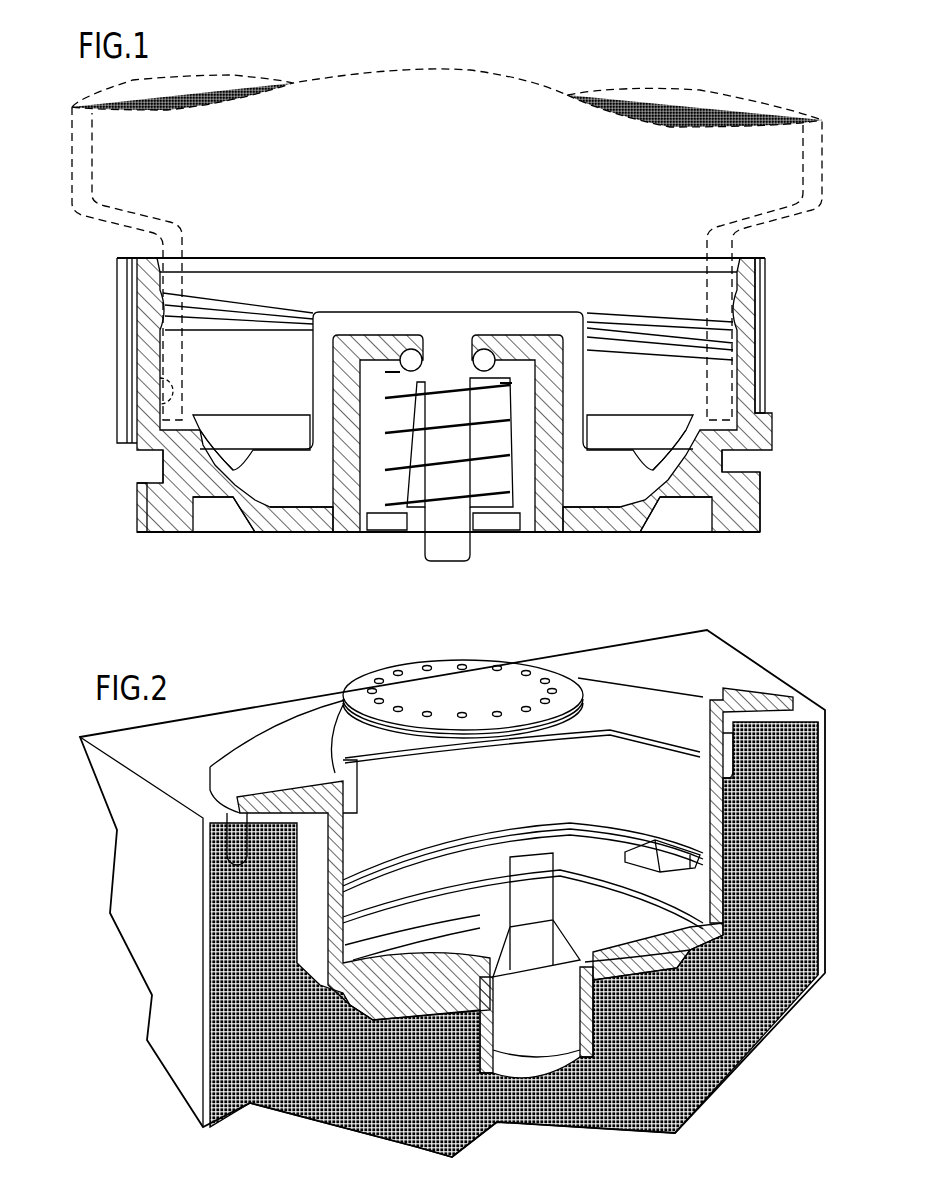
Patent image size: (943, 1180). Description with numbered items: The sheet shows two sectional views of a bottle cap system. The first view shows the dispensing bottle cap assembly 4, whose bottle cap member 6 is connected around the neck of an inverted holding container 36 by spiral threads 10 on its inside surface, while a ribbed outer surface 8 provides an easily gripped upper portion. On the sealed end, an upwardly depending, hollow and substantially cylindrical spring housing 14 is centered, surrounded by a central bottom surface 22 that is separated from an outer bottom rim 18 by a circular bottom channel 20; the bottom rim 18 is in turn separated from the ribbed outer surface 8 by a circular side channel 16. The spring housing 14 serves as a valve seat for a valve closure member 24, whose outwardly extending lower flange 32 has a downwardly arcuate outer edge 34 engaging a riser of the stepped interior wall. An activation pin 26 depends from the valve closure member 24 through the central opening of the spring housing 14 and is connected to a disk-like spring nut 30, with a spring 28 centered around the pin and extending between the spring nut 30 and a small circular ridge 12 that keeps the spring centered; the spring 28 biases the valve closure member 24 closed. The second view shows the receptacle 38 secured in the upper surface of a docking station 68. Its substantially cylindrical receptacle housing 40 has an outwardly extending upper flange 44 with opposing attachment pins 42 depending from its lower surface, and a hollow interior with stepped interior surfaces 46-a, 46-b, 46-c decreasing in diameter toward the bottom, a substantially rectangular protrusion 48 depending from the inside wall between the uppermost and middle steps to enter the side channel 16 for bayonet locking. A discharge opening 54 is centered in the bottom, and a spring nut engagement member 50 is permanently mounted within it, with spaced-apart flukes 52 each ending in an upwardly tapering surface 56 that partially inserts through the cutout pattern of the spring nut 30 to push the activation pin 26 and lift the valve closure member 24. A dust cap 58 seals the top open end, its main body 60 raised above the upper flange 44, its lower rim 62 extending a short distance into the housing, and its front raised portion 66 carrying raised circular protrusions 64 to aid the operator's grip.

In FIG. 1, the dispensing bottle cap assembly 4 is at (80, 267).
In FIG. 1, the bottle cap member 6 is at (137, 432).
In FIG. 1, the ribbed outer surface 8 is at (125, 355).
In FIG. 1, the spiral threads 10 is at (274, 297).
In FIG. 1, the circular ridge 12 is at (408, 356).
In FIG. 1, the spring housing 14 is at (543, 387).
In FIG. 1, the side channel 16 is at (145, 467).
In FIG. 1, the bottom rim 18 is at (170, 515).
In FIG. 1, the bottom channel 20 is at (218, 520).
In FIG. 1, the central bottom surface 22 is at (302, 520).
In FIG. 1, the valve closure member 24 is at (528, 323).
In FIG. 1, the activation pin 26 is at (440, 543).
In FIG. 1, the spring 28 is at (387, 513).
In FIG. 1, the disk-like spring nut 30 is at (502, 517).
In FIG. 1, the lower flange 32 is at (278, 457).
In FIG. 1, the sealing lip 34 is at (238, 453).
In FIG. 1, the holding container 36 is at (777, 230).
In FIG. 2, the receptacle 38 is at (228, 940).
In FIG. 2, the receptacle housing 40 is at (308, 947).
In FIG. 2, the attachment pins 42 is at (233, 842).
In FIG. 2, the upper flange 44 is at (240, 755).
In FIG. 2, the uppermost stepped interior surface 46-a is at (663, 838).
In FIG. 2, the middle stepped interior surface 46-b is at (613, 877).
In FIG. 2, the lowest stepped interior surface 46-c is at (617, 947).
In FIG. 2, the rectangular protrusion 48 is at (612, 840).
In FIG. 2, the spring nut engagement member 50 is at (530, 993).
In FIG. 2, the flukes 52 is at (572, 997).
In FIG. 2, the discharge opening 54 is at (532, 1040).
In FIG. 2, the upwardly tapering surface 56 is at (500, 945).
In FIG. 2, the dust cap 58 is at (687, 678).
In FIG. 2, the main body 60 is at (630, 690).
In FIG. 2, the lower rim 62 is at (598, 733).
In FIG. 2, the raised circular protrusions 64 is at (470, 717).
In FIG. 2, the front raised portion 66 is at (355, 685).
In FIG. 2, the docking station 68 is at (157, 753).